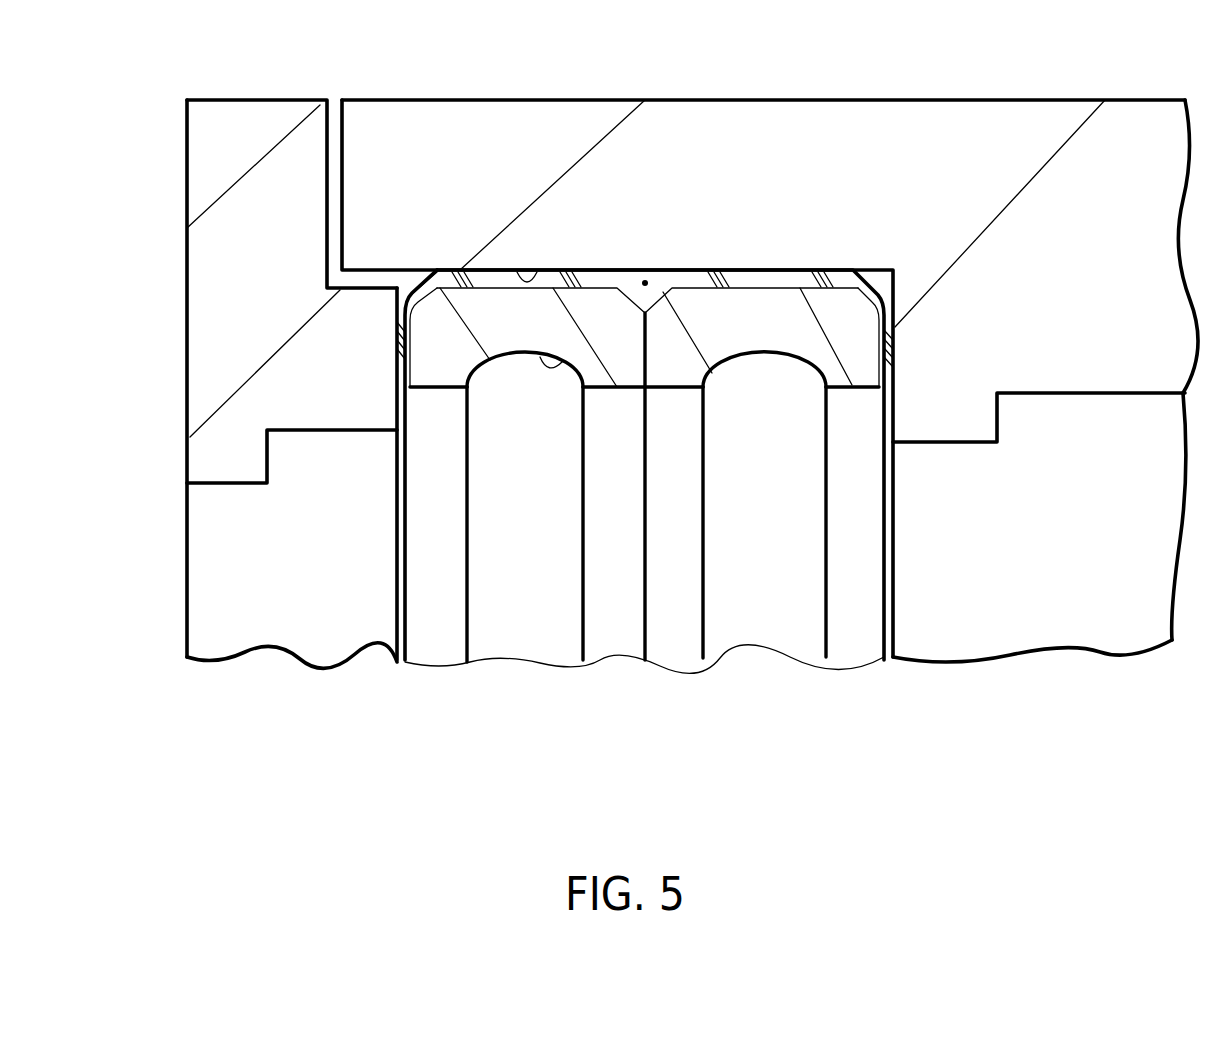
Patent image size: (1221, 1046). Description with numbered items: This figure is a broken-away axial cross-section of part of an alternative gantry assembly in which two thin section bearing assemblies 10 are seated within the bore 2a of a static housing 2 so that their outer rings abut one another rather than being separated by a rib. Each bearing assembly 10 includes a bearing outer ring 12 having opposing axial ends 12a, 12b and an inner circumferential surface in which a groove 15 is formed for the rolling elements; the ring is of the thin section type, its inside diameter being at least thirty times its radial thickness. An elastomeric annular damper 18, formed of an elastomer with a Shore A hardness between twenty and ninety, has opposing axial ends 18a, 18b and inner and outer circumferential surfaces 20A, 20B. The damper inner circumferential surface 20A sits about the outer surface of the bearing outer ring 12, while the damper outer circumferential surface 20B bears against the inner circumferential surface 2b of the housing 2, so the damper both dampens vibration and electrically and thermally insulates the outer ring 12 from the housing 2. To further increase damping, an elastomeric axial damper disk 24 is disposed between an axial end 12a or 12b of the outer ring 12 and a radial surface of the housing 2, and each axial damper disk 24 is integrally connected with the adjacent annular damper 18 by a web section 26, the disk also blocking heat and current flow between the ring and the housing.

The static housing 2 is at (240, 50).
The bore 2a is at (645, 279).
The inner circumferential surface 2b is at (544, 270).
The thin section bearing assembly 10 is at (368, 556).
The bearing outer ring 12 is at (395, 407).
The axial end 12a is at (403, 442).
The axial end 12b is at (645, 438).
The groove 15 is at (563, 363).
The elastomeric annular damper 18 is at (450, 262).
The axial end 18a is at (435, 272).
The axial end 18b is at (610, 283).
The inner circumferential surface 20A is at (505, 293).
The outer circumferential surface 20B is at (505, 266).
The elastomeric axial damper disk 24 is at (392, 338).
The web section 26 is at (398, 291).